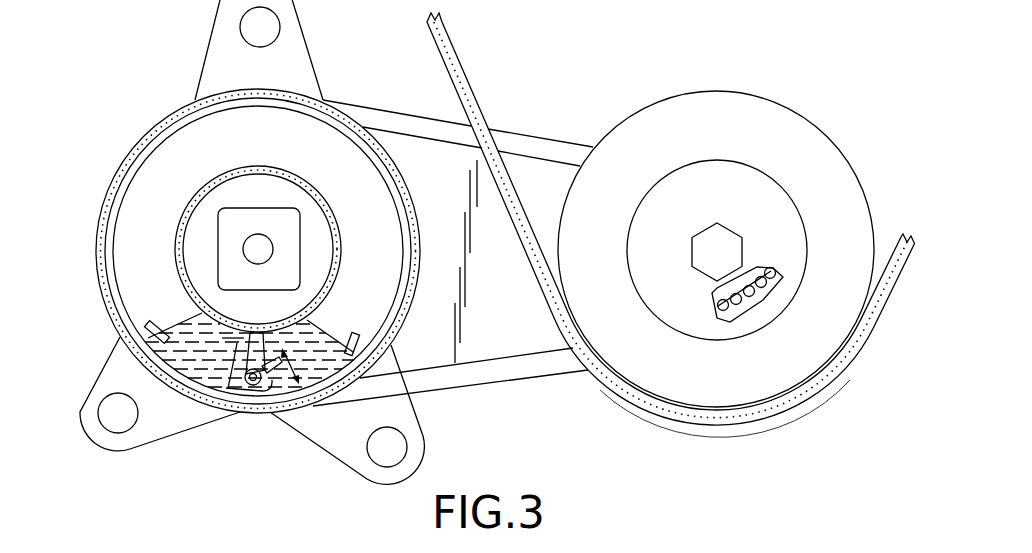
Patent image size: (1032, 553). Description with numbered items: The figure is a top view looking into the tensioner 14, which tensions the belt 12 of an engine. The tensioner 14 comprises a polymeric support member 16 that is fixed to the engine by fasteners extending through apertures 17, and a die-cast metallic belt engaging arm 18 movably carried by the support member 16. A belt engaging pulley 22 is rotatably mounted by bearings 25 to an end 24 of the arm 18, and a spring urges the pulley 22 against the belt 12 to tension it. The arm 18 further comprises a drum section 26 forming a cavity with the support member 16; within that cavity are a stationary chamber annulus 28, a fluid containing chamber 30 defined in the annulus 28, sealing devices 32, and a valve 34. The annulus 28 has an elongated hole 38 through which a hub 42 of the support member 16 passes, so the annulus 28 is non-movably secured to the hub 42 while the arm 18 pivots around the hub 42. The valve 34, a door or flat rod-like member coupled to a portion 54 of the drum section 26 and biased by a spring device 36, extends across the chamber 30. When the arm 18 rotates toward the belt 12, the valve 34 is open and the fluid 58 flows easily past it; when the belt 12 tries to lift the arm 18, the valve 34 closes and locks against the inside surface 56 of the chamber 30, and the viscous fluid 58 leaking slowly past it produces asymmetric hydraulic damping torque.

The belt 12 is at (688, 422).
The tensioner 14 is at (636, 76).
The support member 16 is at (217, 65).
The apertures 17 is at (240, 25).
The belt engaging arm 18 is at (525, 133).
The belt engaging pulley 22 is at (777, 103).
The end of the arm 24 is at (782, 430).
The bearings 25 is at (770, 300).
The drum section 26 is at (127, 147).
The stationary chamber annulus 28 is at (150, 208).
The fluid containing chamber 30 is at (148, 343).
The sealing devices 32 is at (395, 208).
The valve 34 is at (240, 358).
The spring device 36 is at (255, 385).
The elongated hole 38 is at (228, 256).
The hub 42 is at (258, 218).
The portion of the drum section 54 is at (267, 403).
The inside surface of the chamber 56 is at (230, 340).
The fluid 58 is at (192, 363).